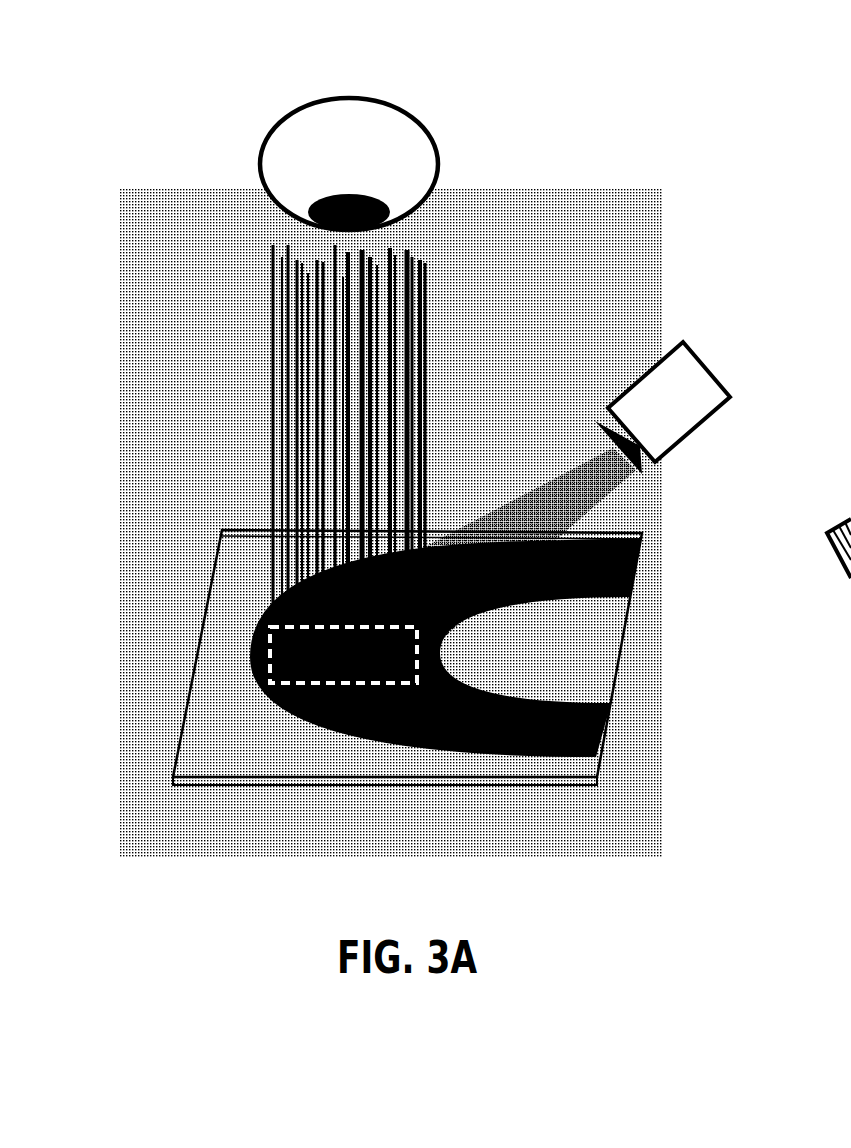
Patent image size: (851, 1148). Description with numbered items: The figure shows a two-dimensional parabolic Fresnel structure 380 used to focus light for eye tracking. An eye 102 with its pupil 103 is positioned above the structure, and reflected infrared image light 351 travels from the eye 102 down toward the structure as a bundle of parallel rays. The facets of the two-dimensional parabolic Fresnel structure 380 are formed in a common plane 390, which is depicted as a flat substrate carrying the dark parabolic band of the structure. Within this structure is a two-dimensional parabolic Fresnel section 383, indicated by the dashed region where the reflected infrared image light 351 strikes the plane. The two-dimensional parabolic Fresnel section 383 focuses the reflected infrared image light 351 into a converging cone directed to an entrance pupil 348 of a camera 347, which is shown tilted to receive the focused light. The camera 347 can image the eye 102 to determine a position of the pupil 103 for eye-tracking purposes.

The eye 102 is at (279, 120).
The pupil 103 is at (325, 197).
The camera 347 is at (720, 377).
The entrance pupil 348 is at (590, 420).
The reflected infrared image light 351 is at (180, 655).
The two-dimensional parabolic Fresnel structure 380 is at (610, 739).
The two-dimensional parabolic Fresnel section 383 is at (272, 689).
The common plane 390 is at (227, 590).